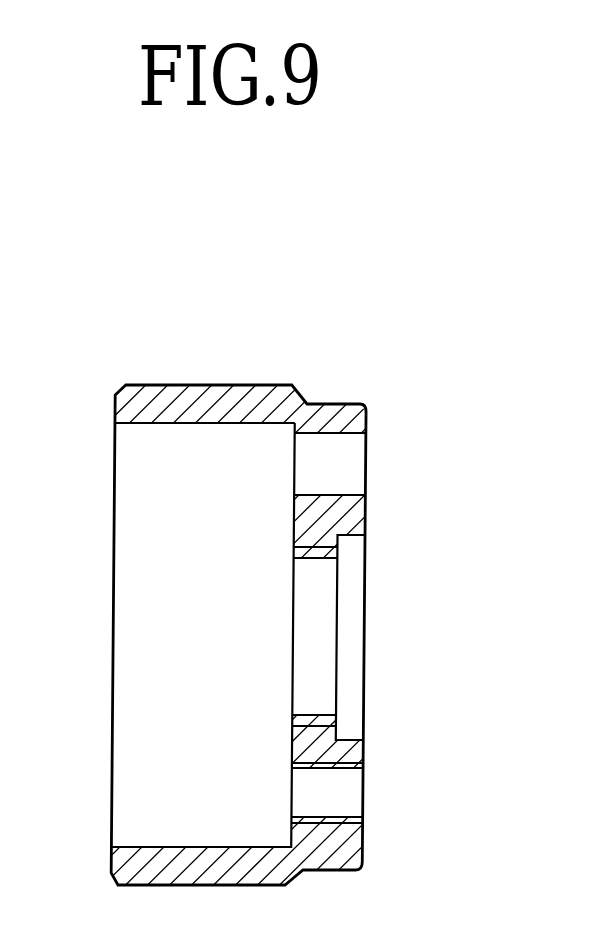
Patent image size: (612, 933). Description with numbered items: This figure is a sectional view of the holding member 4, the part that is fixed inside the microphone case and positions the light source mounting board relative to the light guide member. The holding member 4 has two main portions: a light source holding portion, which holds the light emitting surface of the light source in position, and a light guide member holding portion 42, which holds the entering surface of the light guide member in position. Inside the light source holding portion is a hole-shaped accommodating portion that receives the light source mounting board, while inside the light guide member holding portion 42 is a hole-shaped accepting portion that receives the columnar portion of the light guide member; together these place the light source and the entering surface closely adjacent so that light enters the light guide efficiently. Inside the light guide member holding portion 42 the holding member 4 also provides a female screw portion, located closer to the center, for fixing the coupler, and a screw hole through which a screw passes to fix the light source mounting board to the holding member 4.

The holding member 4 is at (306, 547).
The light guide member holding portion 42 is at (345, 404).